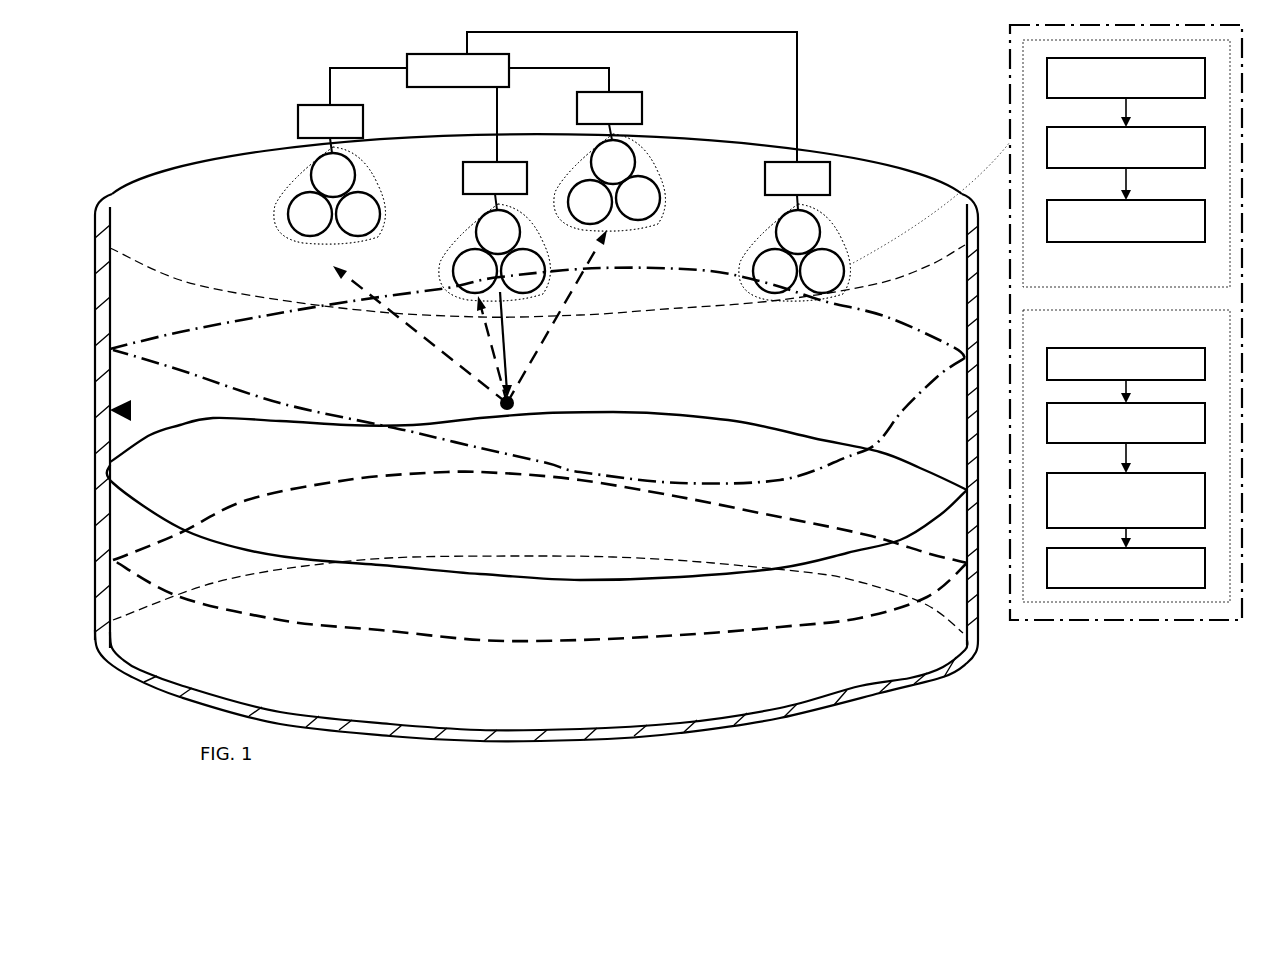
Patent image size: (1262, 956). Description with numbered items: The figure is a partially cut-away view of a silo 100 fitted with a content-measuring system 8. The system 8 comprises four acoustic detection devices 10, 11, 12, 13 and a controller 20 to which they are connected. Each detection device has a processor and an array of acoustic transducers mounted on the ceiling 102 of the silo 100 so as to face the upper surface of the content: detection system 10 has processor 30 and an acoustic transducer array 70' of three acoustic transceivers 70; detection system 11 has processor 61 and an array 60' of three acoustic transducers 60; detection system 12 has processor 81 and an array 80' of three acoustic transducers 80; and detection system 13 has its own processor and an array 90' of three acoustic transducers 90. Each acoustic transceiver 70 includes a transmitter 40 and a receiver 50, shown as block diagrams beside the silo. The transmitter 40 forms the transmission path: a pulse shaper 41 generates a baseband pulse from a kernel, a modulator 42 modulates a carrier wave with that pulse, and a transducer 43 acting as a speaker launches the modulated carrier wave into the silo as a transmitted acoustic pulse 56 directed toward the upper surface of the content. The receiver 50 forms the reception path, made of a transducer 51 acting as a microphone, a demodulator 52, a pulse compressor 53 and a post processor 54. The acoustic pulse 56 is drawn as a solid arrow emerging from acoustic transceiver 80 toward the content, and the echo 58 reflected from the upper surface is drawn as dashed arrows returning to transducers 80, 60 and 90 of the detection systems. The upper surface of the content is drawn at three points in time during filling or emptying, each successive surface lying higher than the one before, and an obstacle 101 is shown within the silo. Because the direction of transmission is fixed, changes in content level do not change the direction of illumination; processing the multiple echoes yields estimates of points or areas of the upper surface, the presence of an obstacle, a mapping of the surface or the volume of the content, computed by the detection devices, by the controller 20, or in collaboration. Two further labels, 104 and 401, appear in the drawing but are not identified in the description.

The system 8 is at (205, 118).
The acoustic detection system 10 is at (842, 231).
The acoustic detection system 11 is at (666, 98).
The acoustic detection system 12 is at (450, 243).
The acoustic detection system 13 is at (298, 171).
The controller 20 is at (563, 97).
The processor 30 is at (797, 186).
The transmitter 40 is at (1126, 163).
The pulse shaper 41 is at (1126, 92).
The modulator 42 is at (1126, 163).
The transducer 43 is at (1126, 221).
The receiver 50 is at (1126, 456).
The transducer 51 is at (1126, 375).
The demodulator 52 is at (1126, 438).
The pulse compressor 53 is at (1126, 510).
The post processor 54 is at (1126, 568).
The acoustic pulse 56 is at (513, 345).
The echo 58 is at (467, 316).
The acoustic transducer 60 is at (614, 182).
The acoustic transducer array 60' is at (632, 197).
The processor 61 is at (609, 116).
The acoustic transceiver 70 is at (997, 353).
The acoustic transducer array 70' is at (784, 249).
The acoustic transducer 80 is at (499, 251).
The transducer group region 80' is at (497, 220).
The processor 81 is at (495, 186).
The acoustic transducer 90 is at (334, 194).
The acoustic transducer array 90' is at (337, 194).
The silo 100 is at (823, 717).
The obstacle 101 is at (536, 431).
The ceiling 102 is at (152, 178).
The fluid level marker 104 is at (118, 402).
The measurement point 401 is at (516, 401).